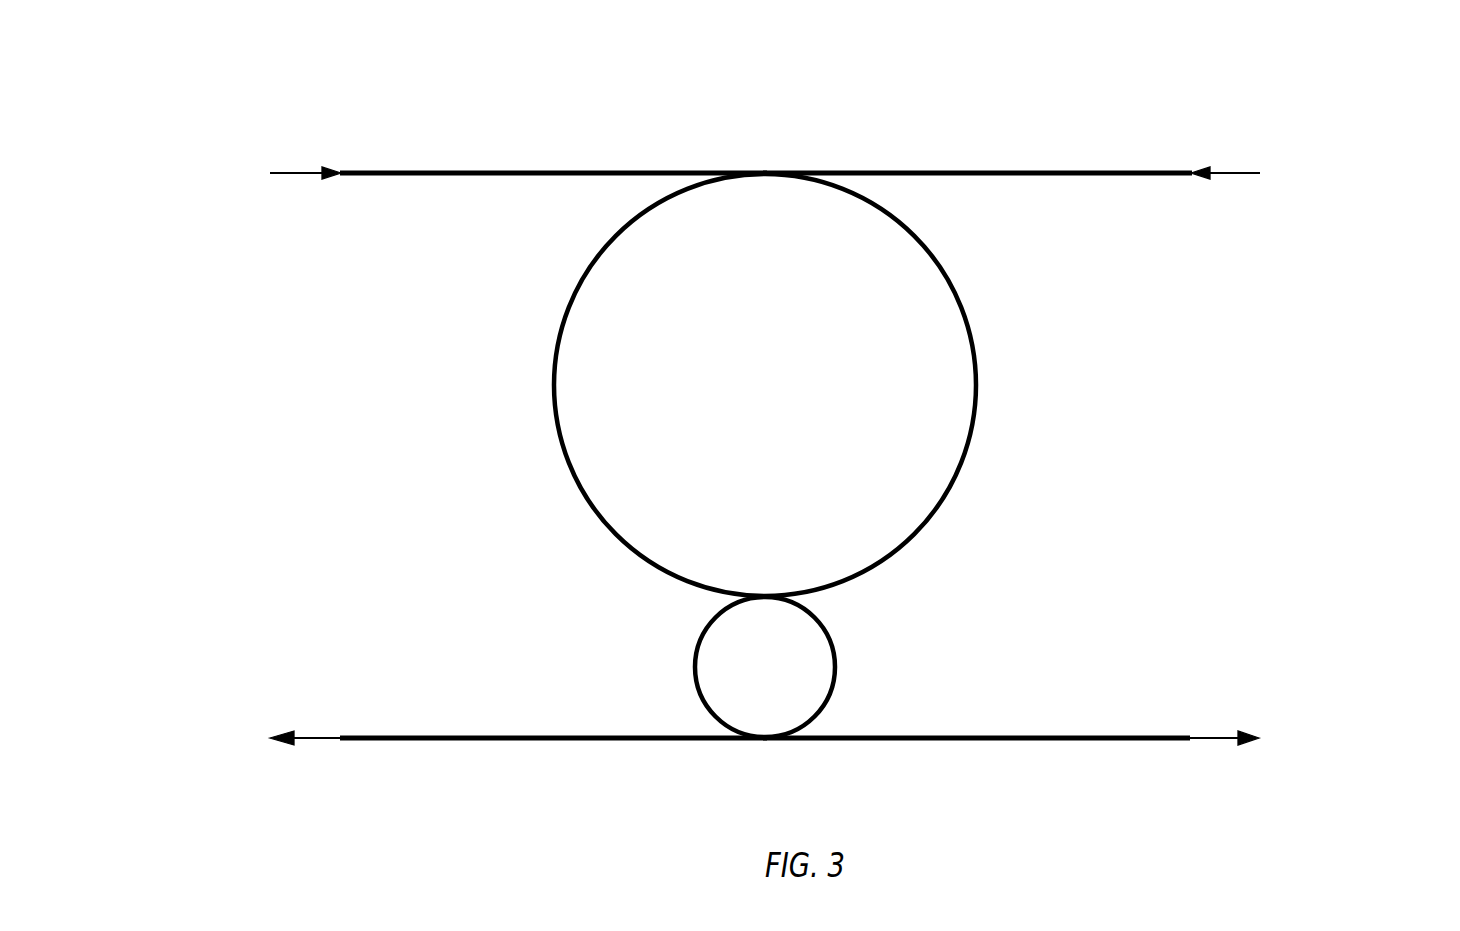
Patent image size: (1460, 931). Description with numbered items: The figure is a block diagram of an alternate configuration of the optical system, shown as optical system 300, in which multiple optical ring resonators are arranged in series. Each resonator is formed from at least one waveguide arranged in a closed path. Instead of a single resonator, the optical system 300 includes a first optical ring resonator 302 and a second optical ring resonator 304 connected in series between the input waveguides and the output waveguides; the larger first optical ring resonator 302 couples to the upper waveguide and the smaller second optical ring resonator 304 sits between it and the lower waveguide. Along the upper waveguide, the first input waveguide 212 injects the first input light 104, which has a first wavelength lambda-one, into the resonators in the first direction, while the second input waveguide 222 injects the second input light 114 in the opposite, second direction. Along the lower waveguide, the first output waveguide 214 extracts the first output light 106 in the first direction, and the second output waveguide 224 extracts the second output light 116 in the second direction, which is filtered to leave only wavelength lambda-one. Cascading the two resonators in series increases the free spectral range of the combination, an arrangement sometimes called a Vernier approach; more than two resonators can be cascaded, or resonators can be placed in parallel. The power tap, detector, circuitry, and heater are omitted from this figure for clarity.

The optical system 300 is at (222, 168).
The first input light 104 is at (297, 172).
The second input light 114 is at (1233, 171).
The first input waveguide 212 is at (748, 157).
The second input waveguide 222 is at (1190, 157).
The first optical ring resonator 302 is at (977, 389).
The second optical ring resonator 304 is at (837, 669).
The second output waveguide 224 is at (748, 757).
The first output waveguide 214 is at (1189, 757).
The second output light 116 is at (318, 742).
The first output light 106 is at (1216, 742).